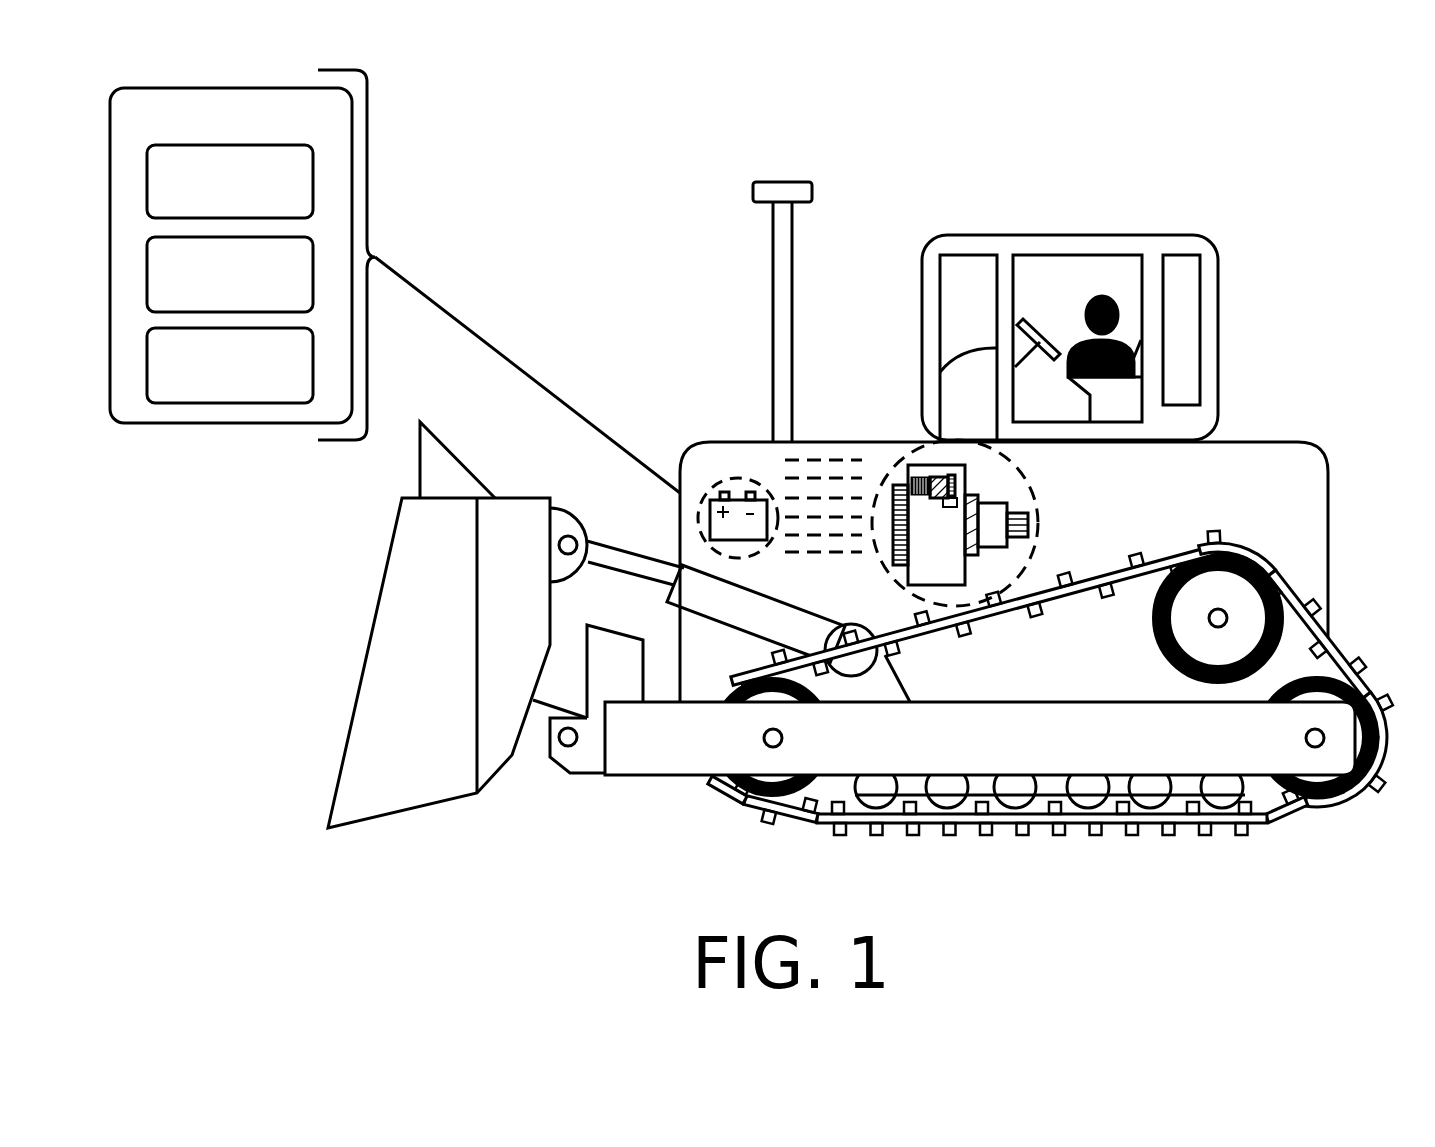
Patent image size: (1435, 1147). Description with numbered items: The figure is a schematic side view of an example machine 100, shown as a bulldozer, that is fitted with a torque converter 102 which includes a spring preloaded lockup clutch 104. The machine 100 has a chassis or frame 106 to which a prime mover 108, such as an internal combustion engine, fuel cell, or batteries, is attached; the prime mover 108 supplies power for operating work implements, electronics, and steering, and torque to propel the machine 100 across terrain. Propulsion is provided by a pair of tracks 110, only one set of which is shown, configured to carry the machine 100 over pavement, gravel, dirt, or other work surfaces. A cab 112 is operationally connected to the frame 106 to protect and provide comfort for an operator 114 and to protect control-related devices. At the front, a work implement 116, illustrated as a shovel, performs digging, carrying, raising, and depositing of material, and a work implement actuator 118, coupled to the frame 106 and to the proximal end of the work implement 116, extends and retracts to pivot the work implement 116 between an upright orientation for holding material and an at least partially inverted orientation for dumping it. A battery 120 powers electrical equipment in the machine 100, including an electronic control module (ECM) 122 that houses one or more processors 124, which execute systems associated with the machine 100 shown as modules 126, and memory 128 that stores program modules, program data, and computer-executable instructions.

The machine 100 is at (1257, 440).
The torque converter 102 is at (903, 473).
The spring preloaded lockup clutch 104 is at (928, 483).
The frame 106 is at (1308, 583).
The prime mover 108 is at (793, 463).
The tracks 110 is at (1327, 646).
The cab 112 is at (1222, 290).
The operator 114 is at (1112, 303).
The work implement 116 is at (345, 752).
The work implement actuator 118 is at (667, 577).
The battery 120 is at (722, 483).
The electronic control module (ECM) 122 is at (283, 121).
The processors 124 is at (249, 209).
The modules 126 is at (249, 301).
The memory 128 is at (249, 392).